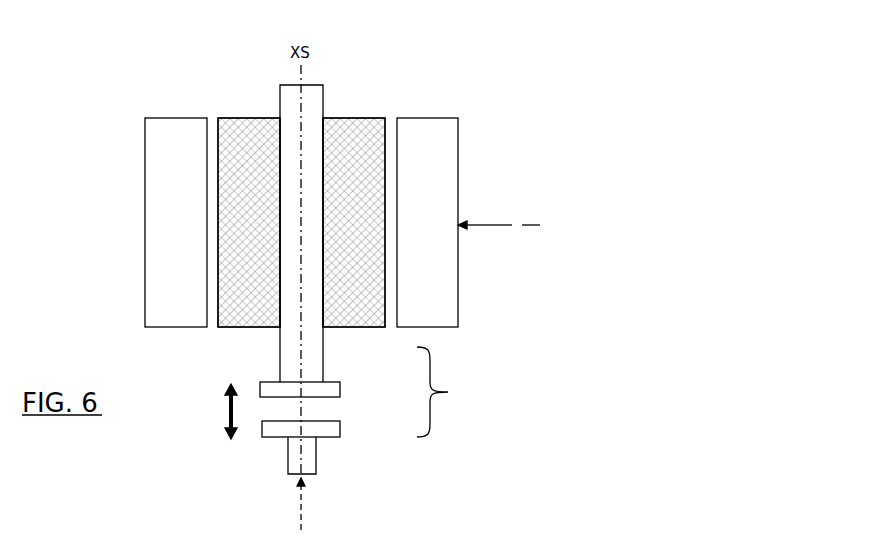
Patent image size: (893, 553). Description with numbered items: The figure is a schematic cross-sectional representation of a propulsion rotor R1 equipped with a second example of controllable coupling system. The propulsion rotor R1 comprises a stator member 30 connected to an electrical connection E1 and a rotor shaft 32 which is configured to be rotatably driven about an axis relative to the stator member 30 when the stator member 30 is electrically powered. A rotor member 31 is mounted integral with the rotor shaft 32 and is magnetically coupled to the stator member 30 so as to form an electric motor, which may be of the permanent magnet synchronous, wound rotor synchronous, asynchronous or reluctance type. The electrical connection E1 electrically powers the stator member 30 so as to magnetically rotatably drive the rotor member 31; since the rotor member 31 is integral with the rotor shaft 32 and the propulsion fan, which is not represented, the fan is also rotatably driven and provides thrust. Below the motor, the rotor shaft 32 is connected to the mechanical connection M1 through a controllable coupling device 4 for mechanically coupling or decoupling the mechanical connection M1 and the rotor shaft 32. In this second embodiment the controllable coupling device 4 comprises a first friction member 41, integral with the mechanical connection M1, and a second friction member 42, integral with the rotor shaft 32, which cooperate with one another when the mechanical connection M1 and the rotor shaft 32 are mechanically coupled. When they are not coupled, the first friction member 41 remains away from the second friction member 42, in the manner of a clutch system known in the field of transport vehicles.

The stator member 30 is at (176, 118).
The rotor member 31 is at (245, 118).
The rotor shaft 32 is at (313, 85).
The controllable coupling device 4 is at (443, 392).
The first friction member 41 is at (340, 428).
The second friction member 42 is at (340, 390).
The mechanical connection M1 is at (301, 497).
The electrical connection E1 is at (523, 225).
The propulsion rotor R1 is at (514, 122).